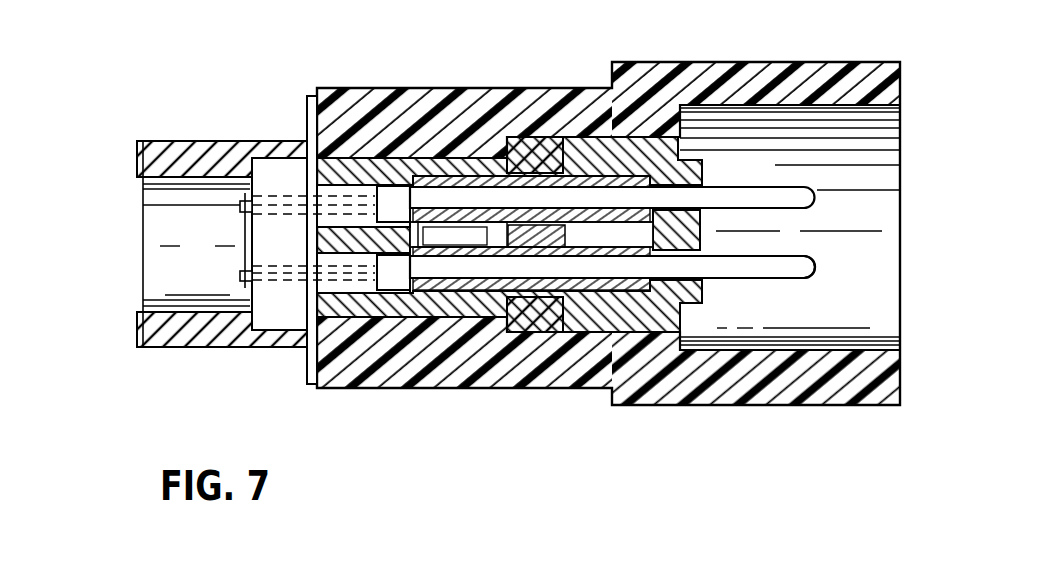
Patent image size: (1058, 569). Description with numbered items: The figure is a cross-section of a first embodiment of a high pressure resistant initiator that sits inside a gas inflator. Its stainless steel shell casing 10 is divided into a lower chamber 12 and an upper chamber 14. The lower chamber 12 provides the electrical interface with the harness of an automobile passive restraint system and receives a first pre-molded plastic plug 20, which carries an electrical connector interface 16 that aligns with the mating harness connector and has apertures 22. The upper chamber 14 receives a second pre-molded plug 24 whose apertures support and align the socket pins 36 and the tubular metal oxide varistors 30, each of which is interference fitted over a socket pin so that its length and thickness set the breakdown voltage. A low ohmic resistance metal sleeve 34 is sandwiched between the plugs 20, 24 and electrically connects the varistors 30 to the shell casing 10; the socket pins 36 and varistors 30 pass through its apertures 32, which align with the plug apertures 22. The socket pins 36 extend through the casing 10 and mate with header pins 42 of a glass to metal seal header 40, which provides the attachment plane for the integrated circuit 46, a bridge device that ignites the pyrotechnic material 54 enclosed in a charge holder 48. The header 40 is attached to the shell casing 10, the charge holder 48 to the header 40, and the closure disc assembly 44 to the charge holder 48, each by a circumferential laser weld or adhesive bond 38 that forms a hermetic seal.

The shell casing 10 is at (790, 394).
The lower chamber 12 is at (622, 137).
The upper chamber 14 is at (390, 181).
The electrical connector interface 16 is at (707, 184).
The first pre-molded plug 20 is at (662, 314).
The apertures 22 is at (700, 268).
The second pre-molded plug 24 is at (368, 308).
The metal oxide varistor 30 is at (467, 308).
The apertures 32 is at (531, 182).
The metal sleeve 34 is at (530, 314).
The socket pins 36 is at (813, 262).
The laser weld joint/adhesive bonding 38 is at (307, 110).
The glass to metal seal header 40 is at (278, 300).
The header pins 42 is at (245, 203).
The closure disc assembly 44 is at (140, 300).
The integrated circuit 46 is at (246, 330).
The charge holder 48 is at (160, 336).
The pyrotechnic material 54 is at (162, 256).